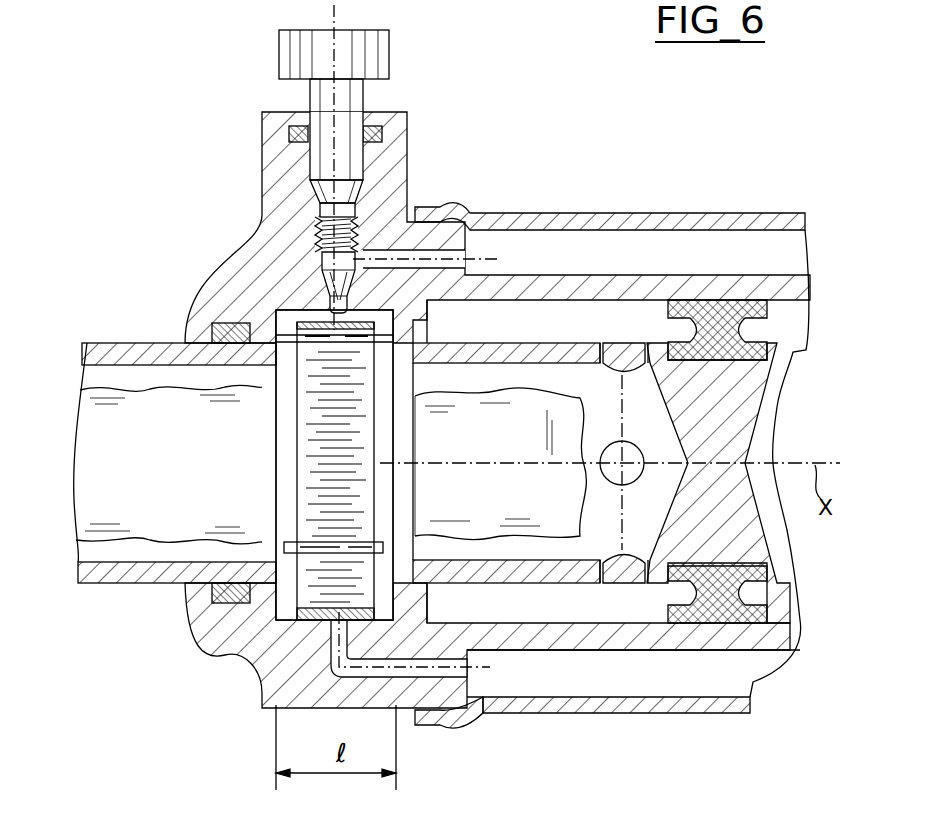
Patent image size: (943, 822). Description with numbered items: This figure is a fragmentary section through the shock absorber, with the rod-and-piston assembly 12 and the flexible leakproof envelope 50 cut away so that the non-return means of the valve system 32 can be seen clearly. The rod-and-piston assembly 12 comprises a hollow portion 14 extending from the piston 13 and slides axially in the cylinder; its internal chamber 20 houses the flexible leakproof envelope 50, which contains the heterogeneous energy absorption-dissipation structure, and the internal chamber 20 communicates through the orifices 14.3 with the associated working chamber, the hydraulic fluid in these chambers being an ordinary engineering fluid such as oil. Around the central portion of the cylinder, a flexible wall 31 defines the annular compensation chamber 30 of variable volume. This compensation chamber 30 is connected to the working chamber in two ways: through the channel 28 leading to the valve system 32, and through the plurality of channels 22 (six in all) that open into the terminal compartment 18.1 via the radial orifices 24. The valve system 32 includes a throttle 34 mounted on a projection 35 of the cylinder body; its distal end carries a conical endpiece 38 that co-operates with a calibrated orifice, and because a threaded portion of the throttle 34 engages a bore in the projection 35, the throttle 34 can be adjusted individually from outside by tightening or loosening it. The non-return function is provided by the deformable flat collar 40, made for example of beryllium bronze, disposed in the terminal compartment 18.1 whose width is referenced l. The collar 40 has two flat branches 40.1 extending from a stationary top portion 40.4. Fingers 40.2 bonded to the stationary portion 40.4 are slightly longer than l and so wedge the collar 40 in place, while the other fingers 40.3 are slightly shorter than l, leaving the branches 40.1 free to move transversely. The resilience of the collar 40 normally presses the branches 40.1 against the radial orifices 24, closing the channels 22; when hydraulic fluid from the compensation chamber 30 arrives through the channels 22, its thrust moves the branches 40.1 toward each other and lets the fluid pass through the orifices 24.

The rod-and-piston assembly 12 is at (135, 344).
The piston 13 is at (720, 333).
The hollow portion 14 is at (92, 585).
The orifices 14.3 is at (622, 352).
The terminal compartment 18.1 is at (283, 598).
The internal chamber 20 is at (558, 315).
The channels 22 is at (447, 710).
The radial orifices 24 is at (328, 625).
The channel 28 is at (425, 258).
The compensation chamber 30 is at (667, 680).
The flexible wall 31 is at (560, 707).
The valve system 32 is at (238, 163).
The throttle 34 is at (389, 46).
The projection 35 is at (407, 130).
The conical endpiece 38 is at (322, 318).
The deformable flat collar 40 is at (297, 492).
The flat branches 40.1 is at (300, 425).
The fingers 40.2 is at (332, 345).
The fingers 40.3 is at (332, 546).
The stationary top portion 40.4 is at (300, 330).
The flexible leakproof envelope 50 is at (105, 455).